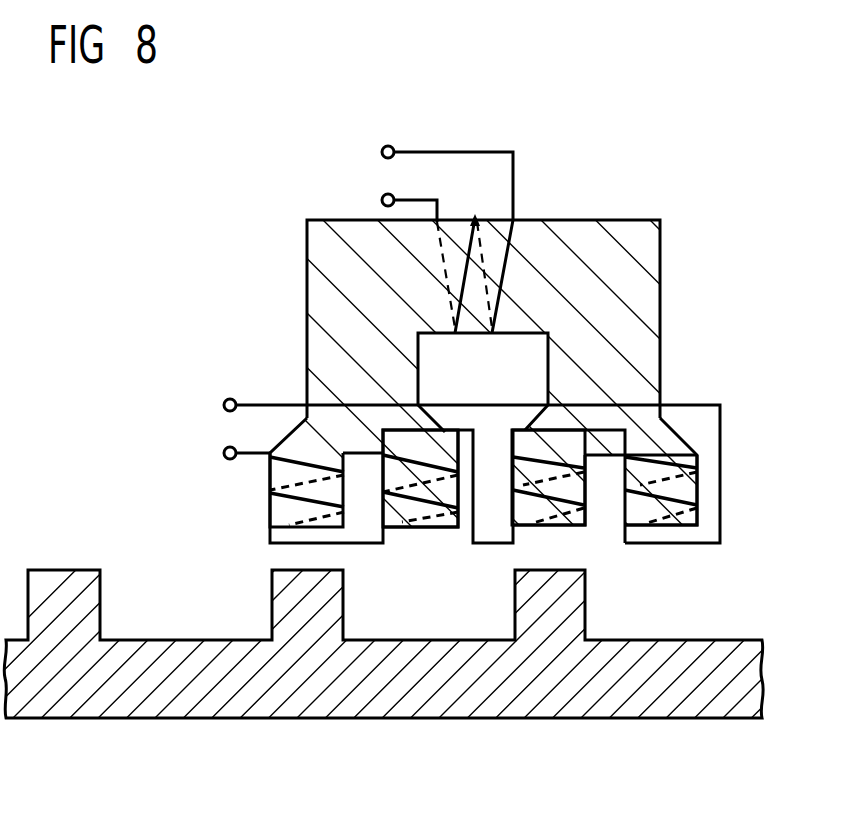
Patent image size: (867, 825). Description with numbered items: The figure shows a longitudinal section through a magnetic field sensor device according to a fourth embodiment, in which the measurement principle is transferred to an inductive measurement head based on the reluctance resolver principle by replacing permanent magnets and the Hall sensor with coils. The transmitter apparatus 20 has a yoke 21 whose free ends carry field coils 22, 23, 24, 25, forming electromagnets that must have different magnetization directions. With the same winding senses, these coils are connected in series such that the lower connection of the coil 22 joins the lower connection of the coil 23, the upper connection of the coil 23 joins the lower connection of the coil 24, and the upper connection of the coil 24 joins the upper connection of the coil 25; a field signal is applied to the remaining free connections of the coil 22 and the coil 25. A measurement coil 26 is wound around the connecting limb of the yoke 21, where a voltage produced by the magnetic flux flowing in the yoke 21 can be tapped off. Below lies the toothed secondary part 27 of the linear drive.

The transmitter apparatus 20 is at (277, 263).
The yoke 21 is at (663, 278).
The field coil 22 is at (270, 515).
The field coil 23 is at (430, 530).
The field coil 24 is at (575, 527).
The field coil 25 is at (697, 515).
The measurement coil 26 is at (513, 258).
The secondary part 27 is at (700, 637).